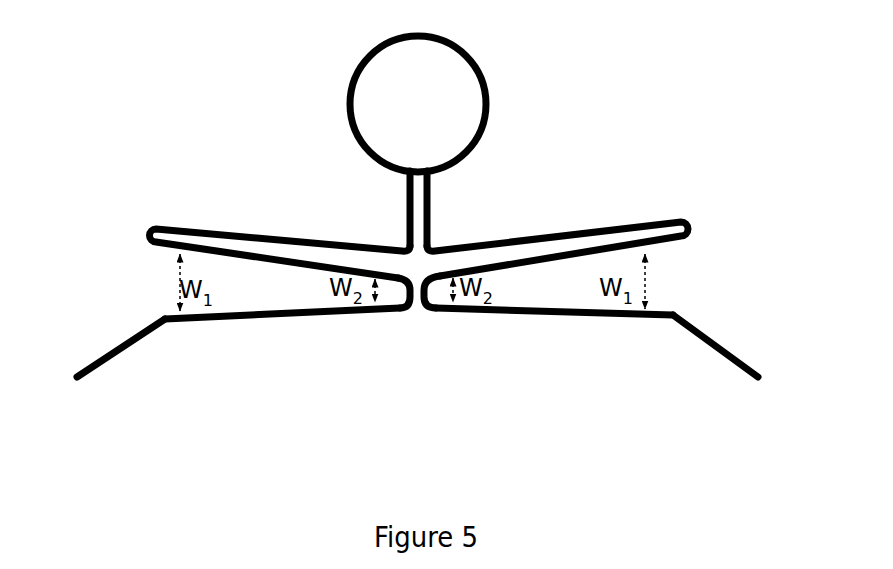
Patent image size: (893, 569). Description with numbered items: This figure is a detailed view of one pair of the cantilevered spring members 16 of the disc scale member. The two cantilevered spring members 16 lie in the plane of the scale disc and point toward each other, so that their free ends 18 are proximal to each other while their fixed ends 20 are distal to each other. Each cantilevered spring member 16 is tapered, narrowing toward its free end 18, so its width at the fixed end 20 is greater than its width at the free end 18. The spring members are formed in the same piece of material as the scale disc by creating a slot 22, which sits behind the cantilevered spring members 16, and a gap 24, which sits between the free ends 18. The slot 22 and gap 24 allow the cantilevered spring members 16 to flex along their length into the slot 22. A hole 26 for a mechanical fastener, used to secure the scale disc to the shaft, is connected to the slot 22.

The cantilevered spring member 16 is at (302, 368).
The free end 18 is at (433, 311).
The fixed end 20 is at (157, 287).
The slot 22 is at (255, 250).
The gap 24 is at (414, 287).
The hole 26 is at (436, 97).